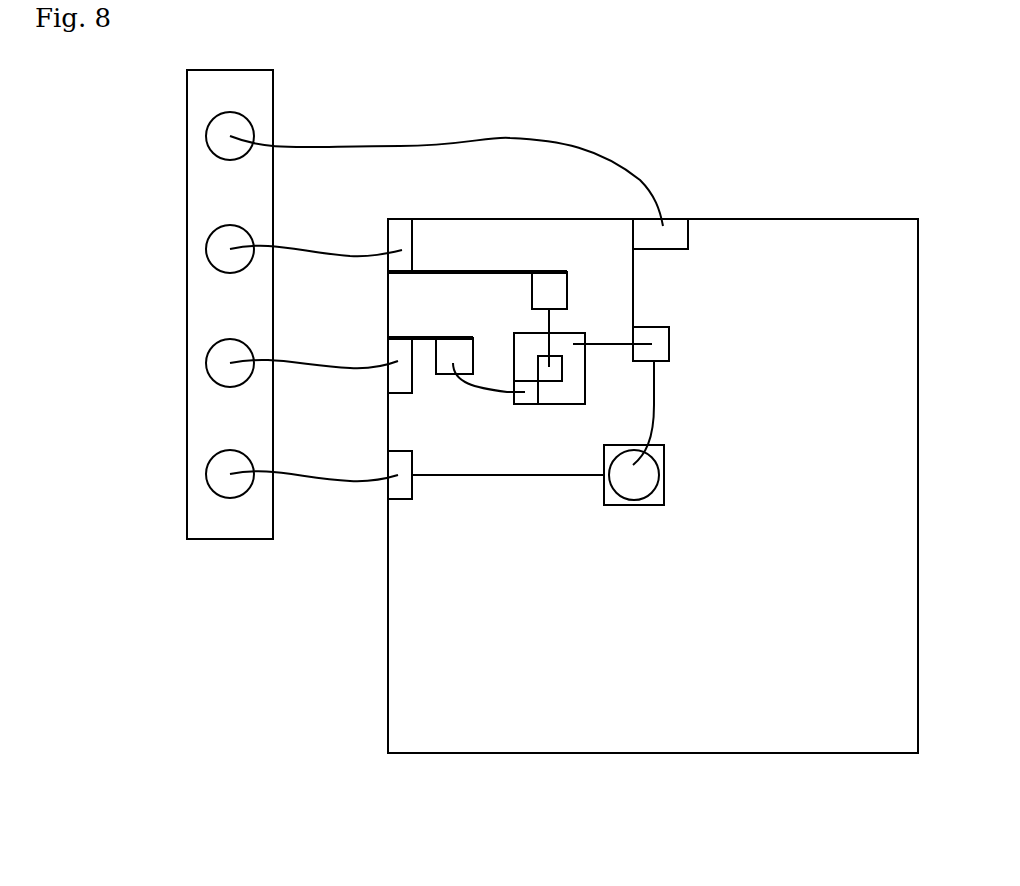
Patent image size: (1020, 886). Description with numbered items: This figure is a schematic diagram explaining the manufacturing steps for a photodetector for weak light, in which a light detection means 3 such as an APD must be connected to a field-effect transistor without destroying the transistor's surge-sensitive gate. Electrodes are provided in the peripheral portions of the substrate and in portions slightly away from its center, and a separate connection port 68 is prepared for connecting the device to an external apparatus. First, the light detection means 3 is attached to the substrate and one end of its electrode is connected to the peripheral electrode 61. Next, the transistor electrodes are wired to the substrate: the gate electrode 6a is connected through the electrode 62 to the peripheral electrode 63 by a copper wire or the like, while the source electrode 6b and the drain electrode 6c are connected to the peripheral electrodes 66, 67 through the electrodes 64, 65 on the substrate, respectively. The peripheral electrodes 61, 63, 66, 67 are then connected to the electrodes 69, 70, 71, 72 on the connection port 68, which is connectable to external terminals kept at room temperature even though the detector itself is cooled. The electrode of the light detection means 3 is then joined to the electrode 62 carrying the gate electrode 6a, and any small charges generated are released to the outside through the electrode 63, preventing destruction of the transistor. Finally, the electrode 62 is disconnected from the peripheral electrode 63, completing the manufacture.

The light detection means 3 is at (652, 505).
The gate electrode 6a is at (583, 355).
The source electrode 6b is at (557, 375).
The drain electrode 6c is at (526, 402).
The electrode 61 is at (403, 499).
The electrode 62 is at (669, 345).
The electrode 63 is at (688, 240).
The electrode 64 is at (552, 270).
The electrode 65 is at (463, 333).
The electrode 66 is at (413, 249).
The electrode 67 is at (400, 348).
The connection port 68 is at (231, 70).
The electrode 69 is at (205, 477).
The electrode 70 is at (205, 367).
The electrode 71 is at (205, 253).
The electrode 72 is at (205, 140).